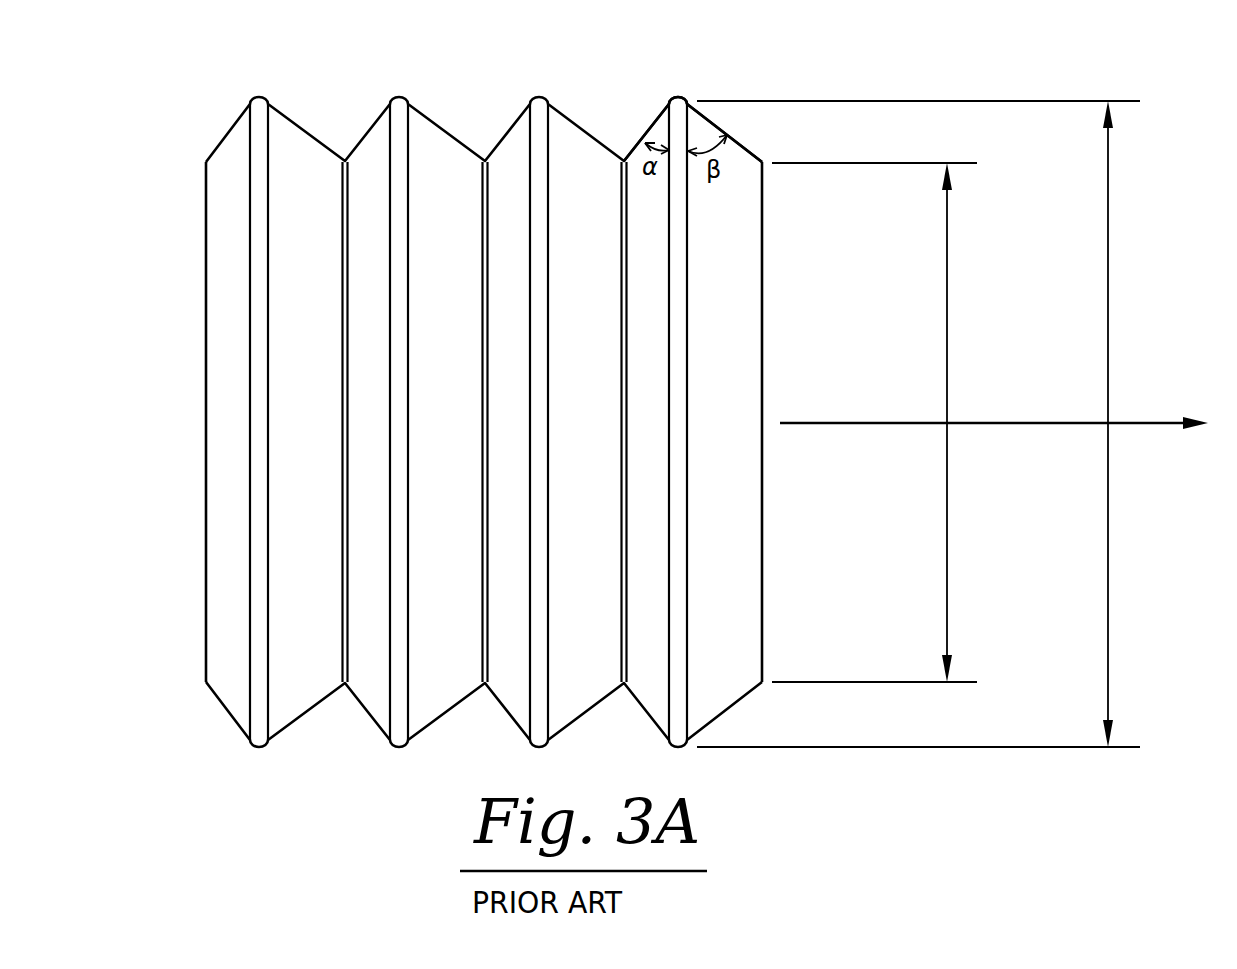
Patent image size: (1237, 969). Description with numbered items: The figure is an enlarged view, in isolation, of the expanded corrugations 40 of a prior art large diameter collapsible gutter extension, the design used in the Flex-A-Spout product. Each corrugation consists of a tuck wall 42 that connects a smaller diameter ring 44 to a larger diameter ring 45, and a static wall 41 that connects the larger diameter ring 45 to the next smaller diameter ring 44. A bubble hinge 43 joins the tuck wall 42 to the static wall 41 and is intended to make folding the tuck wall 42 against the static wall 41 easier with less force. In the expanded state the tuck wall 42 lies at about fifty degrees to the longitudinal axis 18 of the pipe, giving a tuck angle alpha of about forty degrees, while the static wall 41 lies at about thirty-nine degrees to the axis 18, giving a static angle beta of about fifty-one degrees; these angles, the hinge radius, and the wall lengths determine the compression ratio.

The longitudinal axis 18 is at (853, 422).
The corrugations 40 is at (785, 88).
The static wall 41 is at (750, 148).
The tuck wall 42 is at (660, 126).
The hinge 43 is at (682, 98).
The smaller diameter ring 44 is at (947, 523).
The larger diameter ring 45 is at (1108, 525).